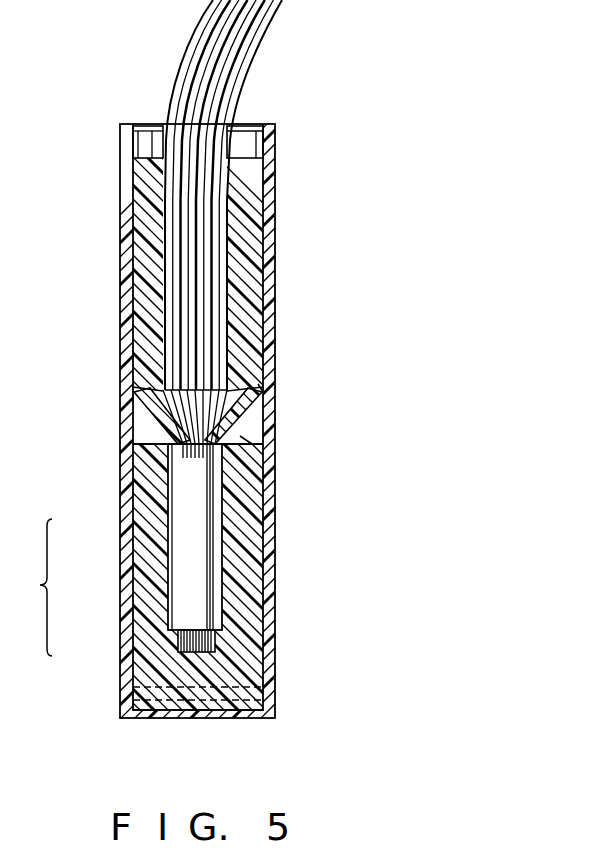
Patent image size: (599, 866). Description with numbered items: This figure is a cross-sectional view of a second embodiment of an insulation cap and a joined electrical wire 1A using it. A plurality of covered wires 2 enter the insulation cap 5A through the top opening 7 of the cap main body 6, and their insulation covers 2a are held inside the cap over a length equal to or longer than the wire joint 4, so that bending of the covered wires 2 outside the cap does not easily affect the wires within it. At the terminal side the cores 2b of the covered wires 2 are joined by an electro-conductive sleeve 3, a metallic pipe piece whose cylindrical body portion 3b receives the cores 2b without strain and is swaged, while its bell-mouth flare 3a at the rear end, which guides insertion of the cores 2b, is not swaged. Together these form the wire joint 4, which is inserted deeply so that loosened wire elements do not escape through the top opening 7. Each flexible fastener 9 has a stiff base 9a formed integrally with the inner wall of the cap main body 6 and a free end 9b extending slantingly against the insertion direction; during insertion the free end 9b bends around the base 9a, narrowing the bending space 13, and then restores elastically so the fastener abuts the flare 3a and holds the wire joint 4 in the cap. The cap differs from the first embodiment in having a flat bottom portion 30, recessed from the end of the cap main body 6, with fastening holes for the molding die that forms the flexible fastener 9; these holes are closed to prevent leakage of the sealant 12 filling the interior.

The joined electrical wire 1A is at (308, 151).
The covered wires 2 is at (260, 60).
The insulation covers 2a is at (224, 242).
The cores 2b is at (178, 643).
The electro-conductive sleeve 3 is at (185, 547).
The flare 3a is at (185, 455).
The body portion 3b is at (213, 620).
The wire joint 4 is at (32, 587).
The insulation cap 5A is at (116, 232).
The cap main body 6 is at (268, 305).
The top opening 7 is at (152, 140).
The flexible fastener 9 is at (245, 428).
The base 9a is at (258, 385).
The free end 9b is at (250, 440).
The sealant 12 is at (250, 530).
The bending space 13 is at (130, 400).
The bottom portion 30 is at (235, 690).